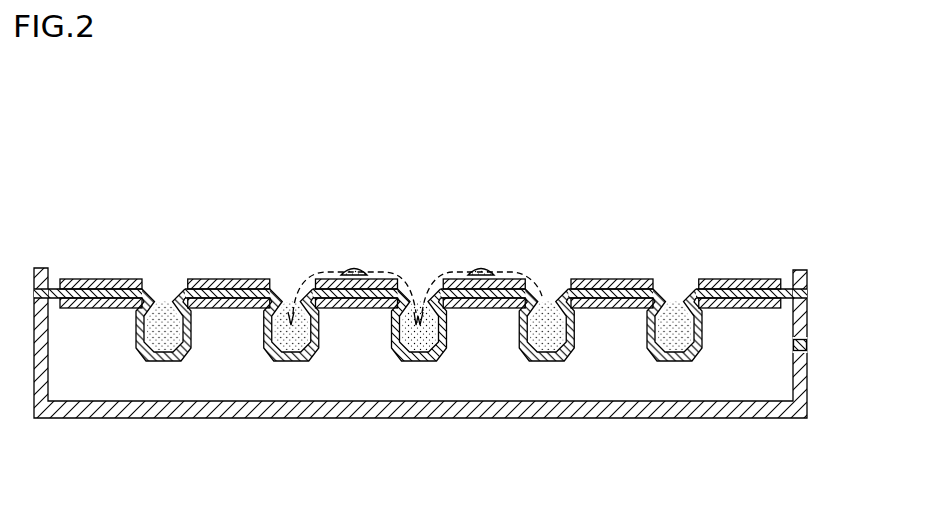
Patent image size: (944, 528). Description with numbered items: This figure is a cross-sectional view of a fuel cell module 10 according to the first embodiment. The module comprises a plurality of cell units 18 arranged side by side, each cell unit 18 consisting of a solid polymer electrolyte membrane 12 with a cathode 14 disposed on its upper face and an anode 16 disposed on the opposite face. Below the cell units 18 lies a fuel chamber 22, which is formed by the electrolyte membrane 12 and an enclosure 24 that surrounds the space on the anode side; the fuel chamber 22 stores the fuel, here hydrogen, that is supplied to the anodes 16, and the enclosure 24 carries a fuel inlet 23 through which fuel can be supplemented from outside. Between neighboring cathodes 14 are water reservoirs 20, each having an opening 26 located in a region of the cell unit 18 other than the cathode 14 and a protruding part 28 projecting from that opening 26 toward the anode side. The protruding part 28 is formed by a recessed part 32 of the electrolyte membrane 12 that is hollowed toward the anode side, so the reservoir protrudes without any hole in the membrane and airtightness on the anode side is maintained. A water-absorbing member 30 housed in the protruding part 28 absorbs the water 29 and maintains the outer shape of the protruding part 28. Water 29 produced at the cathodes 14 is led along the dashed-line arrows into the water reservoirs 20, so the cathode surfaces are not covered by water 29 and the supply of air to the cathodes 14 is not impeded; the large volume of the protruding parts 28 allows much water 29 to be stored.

The fuel cell module 10 is at (698, 177).
The solid polymer electrolyte membrane 12 is at (790, 291).
The cathode 14 is at (737, 279).
The anode 16 is at (763, 310).
The cell unit 18 is at (738, 316).
The water reservoir 20 is at (544, 289).
The fuel chamber 22 is at (477, 373).
The fuel inlet 23 is at (808, 345).
The enclosure 24 is at (808, 390).
The opening 26 is at (552, 300).
The protruding part 28 is at (580, 342).
The water 29 is at (354, 269).
The water-absorbing member 30 is at (547, 347).
The recessed part 32 is at (525, 358).